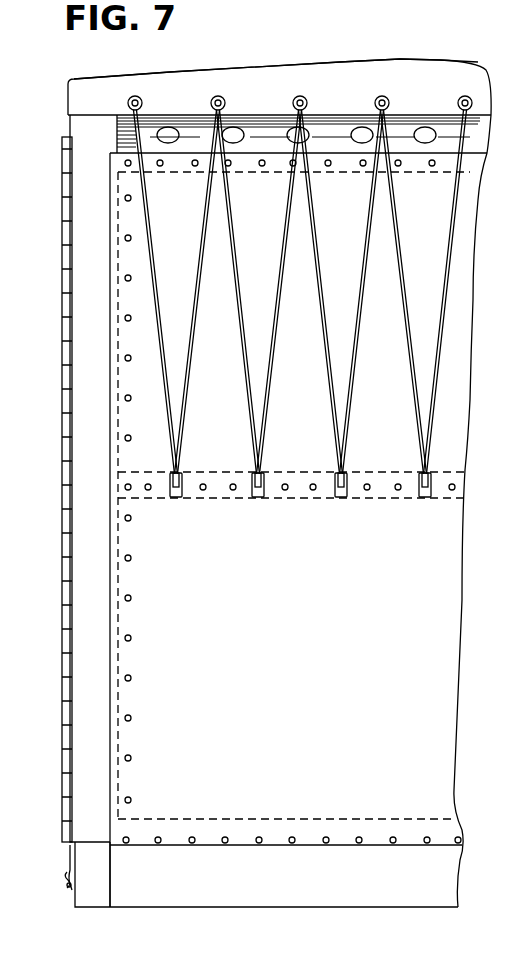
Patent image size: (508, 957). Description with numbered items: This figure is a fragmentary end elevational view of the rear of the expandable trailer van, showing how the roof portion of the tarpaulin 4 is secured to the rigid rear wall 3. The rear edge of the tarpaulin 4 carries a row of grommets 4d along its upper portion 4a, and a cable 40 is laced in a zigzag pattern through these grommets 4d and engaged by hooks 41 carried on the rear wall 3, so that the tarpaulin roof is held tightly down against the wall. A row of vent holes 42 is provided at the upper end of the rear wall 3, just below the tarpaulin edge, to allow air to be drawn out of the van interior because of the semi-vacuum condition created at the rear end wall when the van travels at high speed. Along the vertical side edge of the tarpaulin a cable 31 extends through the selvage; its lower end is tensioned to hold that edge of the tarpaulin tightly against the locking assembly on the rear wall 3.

The rear wall 3 is at (125, 567).
The tarpaulin 4 is at (135, 70).
The top edge of header bar 4a is at (286, 74).
The grommets 4d is at (128, 102).
The cable 31 is at (72, 852).
The cable 40 is at (200, 242).
The hooks 41 is at (180, 472).
The vent holes 42 is at (166, 127).